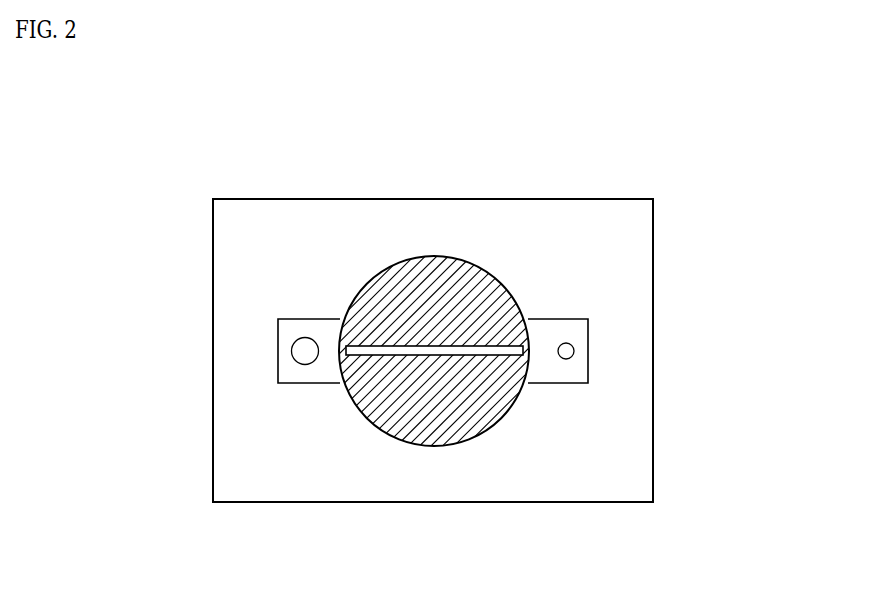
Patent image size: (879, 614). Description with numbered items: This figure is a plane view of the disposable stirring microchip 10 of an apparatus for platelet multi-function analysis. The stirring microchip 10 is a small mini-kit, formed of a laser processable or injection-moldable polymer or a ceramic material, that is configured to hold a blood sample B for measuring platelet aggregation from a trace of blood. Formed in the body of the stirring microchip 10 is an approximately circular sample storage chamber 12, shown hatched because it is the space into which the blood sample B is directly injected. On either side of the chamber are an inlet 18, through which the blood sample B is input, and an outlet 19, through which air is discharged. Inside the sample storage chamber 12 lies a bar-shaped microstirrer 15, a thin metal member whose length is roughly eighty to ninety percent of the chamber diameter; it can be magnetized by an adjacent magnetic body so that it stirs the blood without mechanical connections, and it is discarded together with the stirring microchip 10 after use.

The stirring microchip 10 is at (270, 199).
The sample storage chamber 12 is at (488, 438).
The microstirrer 15 is at (432, 355).
The inlet 18 is at (305, 350).
The outlet 19 is at (566, 351).
The blood sample B is at (430, 283).